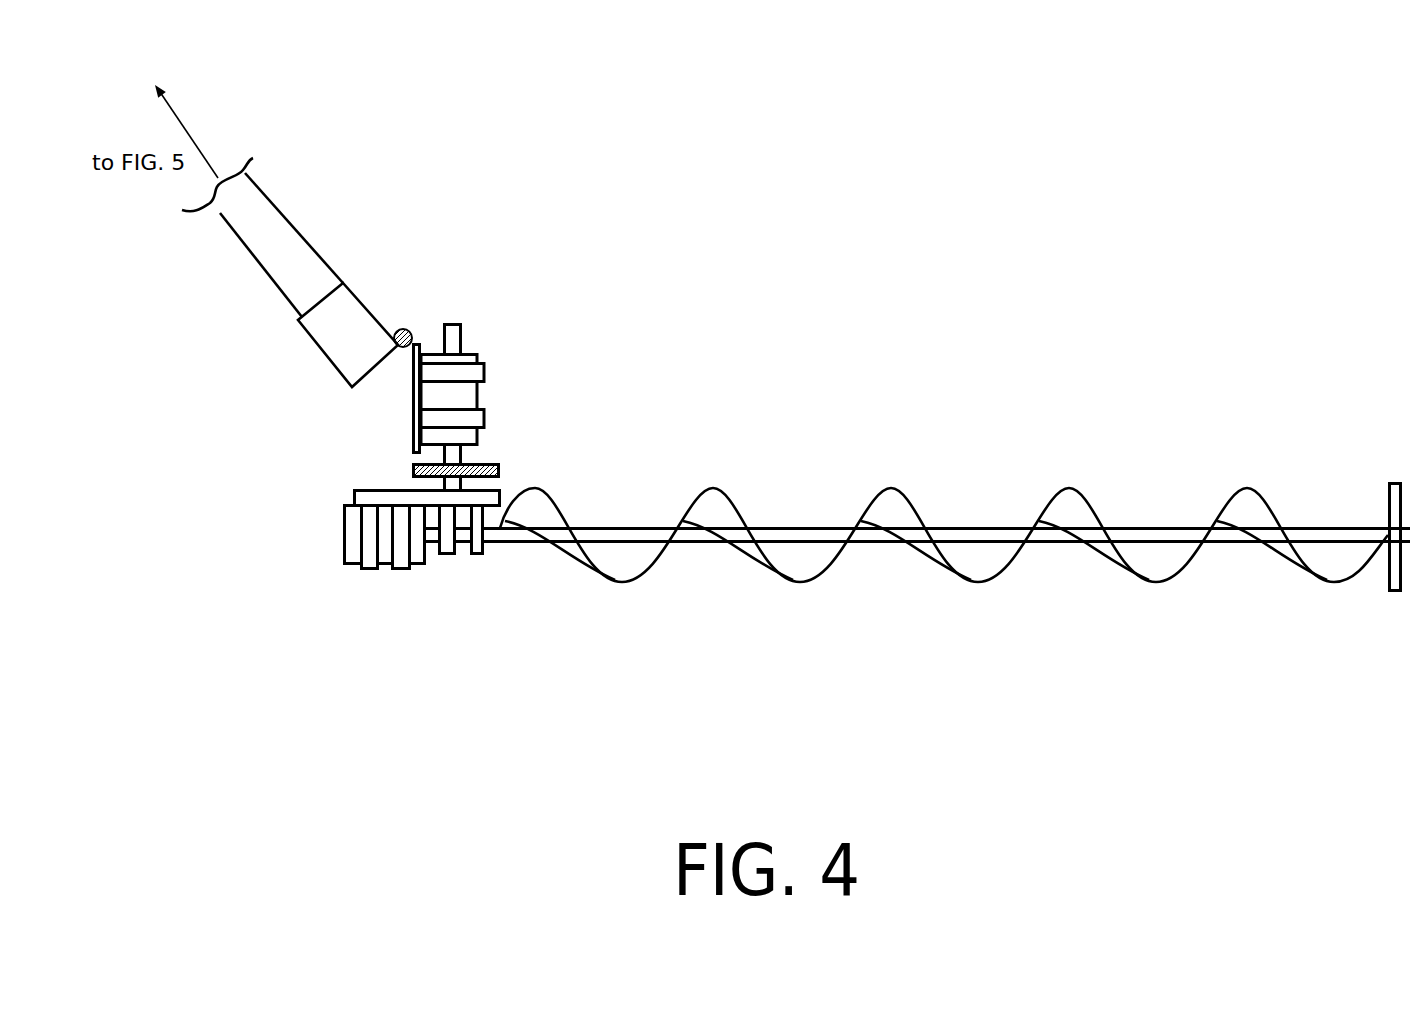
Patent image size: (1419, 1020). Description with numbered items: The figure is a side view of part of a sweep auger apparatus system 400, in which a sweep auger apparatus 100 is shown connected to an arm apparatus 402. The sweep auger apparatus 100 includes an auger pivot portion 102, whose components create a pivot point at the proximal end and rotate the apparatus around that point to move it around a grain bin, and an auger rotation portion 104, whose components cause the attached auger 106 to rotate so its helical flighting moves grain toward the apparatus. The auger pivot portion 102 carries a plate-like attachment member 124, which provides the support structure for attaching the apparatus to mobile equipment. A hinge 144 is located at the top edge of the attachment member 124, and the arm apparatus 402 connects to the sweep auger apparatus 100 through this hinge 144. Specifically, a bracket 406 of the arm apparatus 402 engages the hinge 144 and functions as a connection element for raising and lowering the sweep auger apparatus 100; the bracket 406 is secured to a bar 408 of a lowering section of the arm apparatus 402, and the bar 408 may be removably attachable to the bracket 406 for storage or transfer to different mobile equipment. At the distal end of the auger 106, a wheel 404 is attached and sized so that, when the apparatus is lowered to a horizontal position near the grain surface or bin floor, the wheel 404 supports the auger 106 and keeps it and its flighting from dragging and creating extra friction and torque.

The sweep auger apparatus system 400 is at (1093, 87).
The sweep auger apparatus 100 is at (874, 335).
The auger pivot portion 102 is at (522, 377).
The auger rotation portion 104 is at (383, 595).
The auger 106 is at (744, 473).
The attachment member 124 is at (412, 410).
The hinge joint 144 is at (401, 330).
The arm apparatus 402 is at (408, 208).
The wheel 404 is at (1394, 482).
The bracket 406 is at (323, 352).
The bar 408 is at (292, 223).